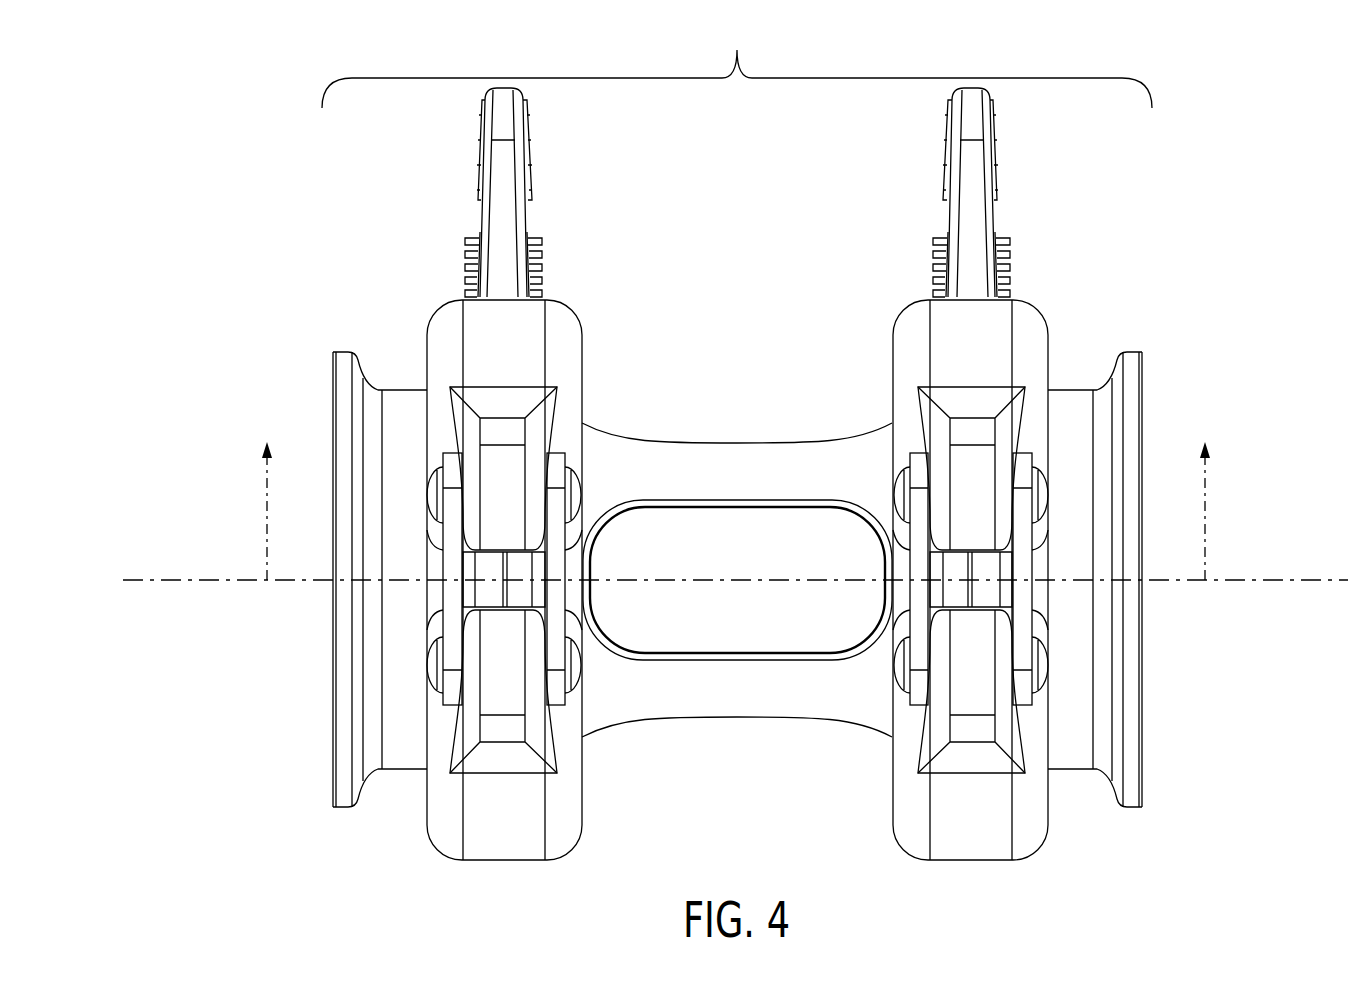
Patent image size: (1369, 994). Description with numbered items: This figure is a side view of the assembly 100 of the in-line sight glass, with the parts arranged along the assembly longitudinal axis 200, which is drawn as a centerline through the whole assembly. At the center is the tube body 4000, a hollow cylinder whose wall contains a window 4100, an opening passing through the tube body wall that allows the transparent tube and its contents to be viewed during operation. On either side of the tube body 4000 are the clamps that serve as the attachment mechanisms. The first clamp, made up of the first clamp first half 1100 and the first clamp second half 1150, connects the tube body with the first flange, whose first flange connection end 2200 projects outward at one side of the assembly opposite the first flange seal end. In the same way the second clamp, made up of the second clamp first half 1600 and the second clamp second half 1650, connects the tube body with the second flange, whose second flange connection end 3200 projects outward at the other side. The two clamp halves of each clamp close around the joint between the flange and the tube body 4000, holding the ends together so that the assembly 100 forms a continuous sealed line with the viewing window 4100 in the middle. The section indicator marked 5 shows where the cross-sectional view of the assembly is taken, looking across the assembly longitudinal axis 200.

The assembly 100 is at (737, 60).
The assembly longitudinal axis 200 is at (149, 592).
The O-ring 5 is at (736, 489).
The first clamp first half 1100 is at (570, 287).
The first clamp second half 1150 is at (560, 858).
The second clamp first half 1600 is at (1032, 318).
The second clamp second half 1650 is at (1022, 858).
The first flange connection end 2200 is at (344, 830).
The second flange connection end 3200 is at (1150, 828).
The tube body 4000 is at (698, 455).
The window 4100 is at (723, 567).